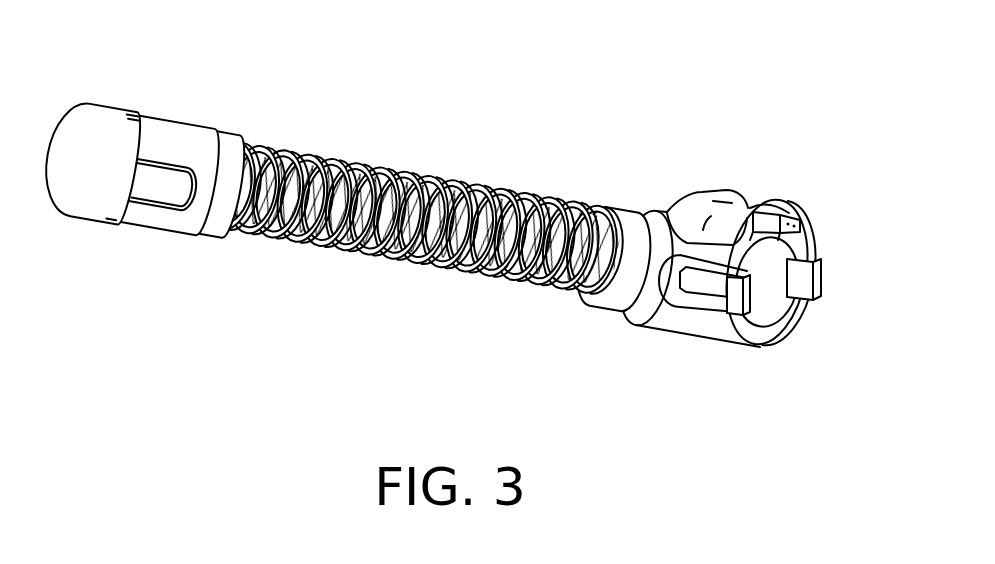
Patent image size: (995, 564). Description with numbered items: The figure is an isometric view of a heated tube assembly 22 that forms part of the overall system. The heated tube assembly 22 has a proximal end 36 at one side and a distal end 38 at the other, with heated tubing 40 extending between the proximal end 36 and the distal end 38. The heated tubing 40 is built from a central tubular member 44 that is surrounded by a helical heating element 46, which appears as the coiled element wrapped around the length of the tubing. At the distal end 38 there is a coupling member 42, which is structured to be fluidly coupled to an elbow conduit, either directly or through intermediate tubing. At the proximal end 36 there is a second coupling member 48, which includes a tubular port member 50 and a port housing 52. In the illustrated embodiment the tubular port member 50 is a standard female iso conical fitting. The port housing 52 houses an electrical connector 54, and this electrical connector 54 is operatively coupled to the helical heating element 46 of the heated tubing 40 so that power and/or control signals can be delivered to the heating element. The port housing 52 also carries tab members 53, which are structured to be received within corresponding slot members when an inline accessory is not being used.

The heated tube assembly 22 is at (553, 100).
The proximal end 36 is at (692, 335).
The distal end 38 is at (180, 230).
The heated tubing 40 is at (407, 178).
The coupling member 42 is at (73, 217).
The central tubular member 44 is at (342, 167).
The helical heating element 46 is at (286, 155).
The coupling member 48 is at (651, 310).
The tubular port member 50 is at (805, 243).
The port housing 52 is at (652, 210).
The tab members 53 is at (746, 303).
The electrical connector 54 is at (803, 222).